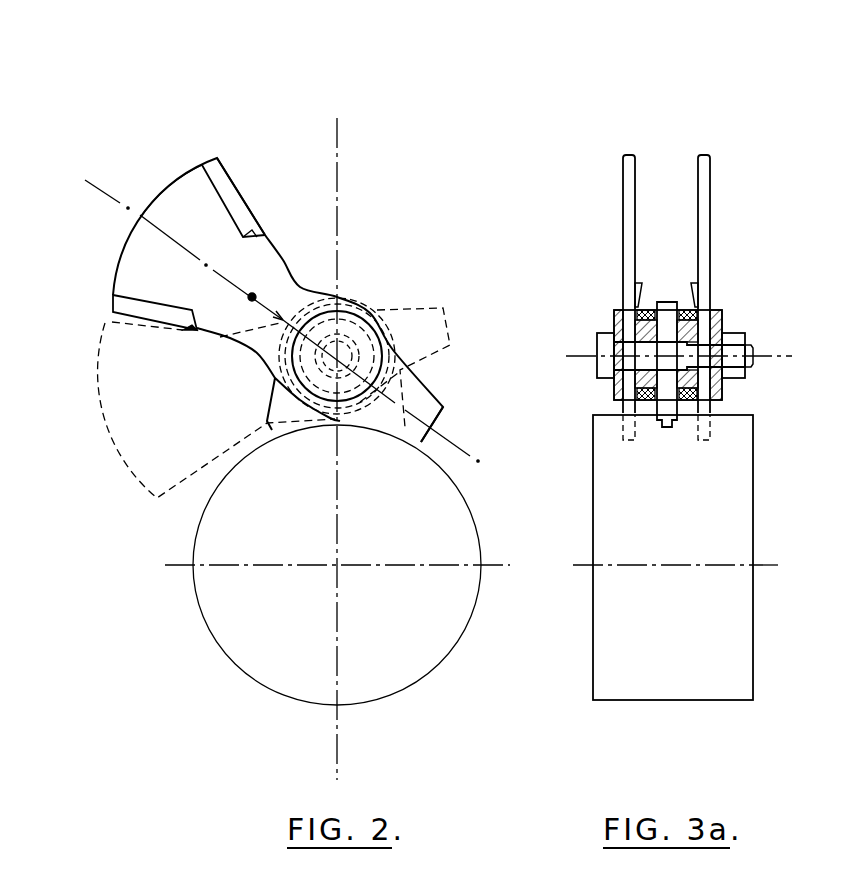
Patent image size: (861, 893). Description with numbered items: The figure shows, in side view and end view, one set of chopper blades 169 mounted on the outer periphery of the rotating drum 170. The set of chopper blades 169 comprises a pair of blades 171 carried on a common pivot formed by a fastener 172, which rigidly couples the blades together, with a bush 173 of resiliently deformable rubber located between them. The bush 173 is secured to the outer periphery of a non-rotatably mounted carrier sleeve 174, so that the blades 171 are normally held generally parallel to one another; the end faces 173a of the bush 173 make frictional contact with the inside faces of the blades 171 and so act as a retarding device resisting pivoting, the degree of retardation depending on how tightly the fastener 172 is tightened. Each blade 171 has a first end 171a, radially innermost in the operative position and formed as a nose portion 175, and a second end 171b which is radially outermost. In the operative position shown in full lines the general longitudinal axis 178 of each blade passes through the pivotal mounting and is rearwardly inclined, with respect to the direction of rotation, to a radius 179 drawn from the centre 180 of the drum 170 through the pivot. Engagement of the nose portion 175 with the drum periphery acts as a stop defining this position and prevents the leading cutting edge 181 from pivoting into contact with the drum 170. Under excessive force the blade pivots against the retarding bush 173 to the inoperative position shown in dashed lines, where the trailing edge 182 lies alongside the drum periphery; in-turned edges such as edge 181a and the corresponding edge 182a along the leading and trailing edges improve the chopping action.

In FIG. 2, the set of chopper blades 169 is at (377, 283).
In FIG. 2, the drum 170 is at (252, 637).
In FIG. 3a, the drum 170 is at (737, 537).
In FIG. 3a, the blade 171 is at (623, 248).
In FIG. 2, the first end of blade 171a is at (443, 405).
In FIG. 2, the second end of blade 171b is at (177, 177).
In FIG. 3a, the fastener 172 is at (748, 334).
In FIG. 3a, the bush 173 is at (647, 308).
In FIG. 3a, the end faces of bush 173a is at (640, 287).
In FIG. 3a, the carrier sleeve 174 is at (684, 390).
In FIG. 2, the nose portion 175 is at (437, 397).
In FIG. 3a, the nose portion 175 is at (706, 432).
In FIG. 2, the general longitudinal axis of blade 178 is at (102, 188).
In FIG. 2, the radius 179 is at (338, 160).
In FIG. 2, the centre of drum 180 is at (339, 567).
In FIG. 2, the leading cutting edge 181 is at (260, 227).
In FIG. 2, the in-turned edge 181a is at (227, 190).
In FIG. 2, the trailing edge 182 is at (248, 353).
In FIG. 2, the block tab 182a is at (130, 306).